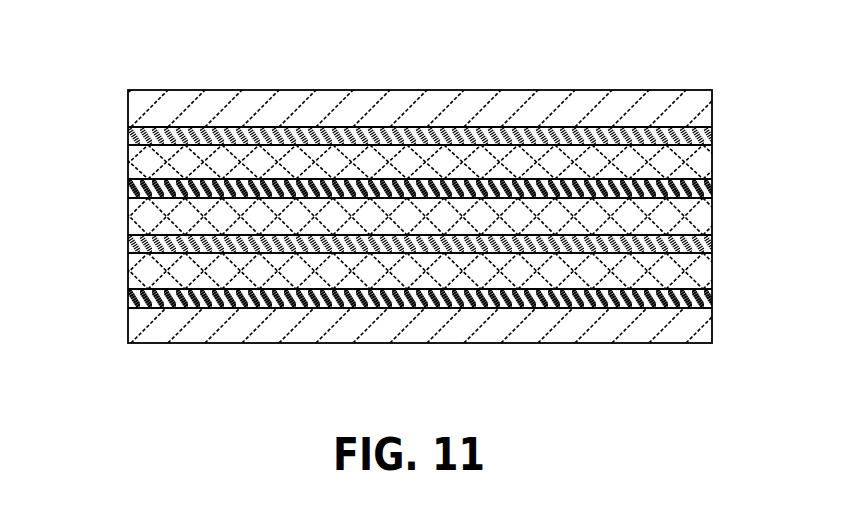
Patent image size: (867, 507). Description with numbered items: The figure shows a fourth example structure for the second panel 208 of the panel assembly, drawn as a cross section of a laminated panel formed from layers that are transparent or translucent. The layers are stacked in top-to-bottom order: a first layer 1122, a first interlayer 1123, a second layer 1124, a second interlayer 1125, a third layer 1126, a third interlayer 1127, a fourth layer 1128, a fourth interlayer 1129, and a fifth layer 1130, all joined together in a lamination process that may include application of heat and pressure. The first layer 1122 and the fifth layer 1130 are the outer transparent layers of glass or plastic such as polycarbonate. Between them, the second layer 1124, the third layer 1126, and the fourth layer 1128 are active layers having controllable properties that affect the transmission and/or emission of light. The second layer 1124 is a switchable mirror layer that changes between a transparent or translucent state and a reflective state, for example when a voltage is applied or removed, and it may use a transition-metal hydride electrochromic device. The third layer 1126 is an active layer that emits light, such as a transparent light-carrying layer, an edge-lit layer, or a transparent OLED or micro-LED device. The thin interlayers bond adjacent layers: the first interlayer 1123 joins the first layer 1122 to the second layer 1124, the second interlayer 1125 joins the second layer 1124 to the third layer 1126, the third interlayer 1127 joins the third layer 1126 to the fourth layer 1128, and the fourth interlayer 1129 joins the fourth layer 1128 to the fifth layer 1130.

The second panel 208 is at (115, 47).
The first layer 1122 is at (712, 112).
The first interlayer 1123 is at (128, 137).
The second layer 1124 is at (712, 163).
The second interlayer 1125 is at (128, 192).
The third layer 1126 is at (712, 222).
The third interlayer 1127 is at (128, 247).
The fourth layer 1128 is at (712, 275).
The fourth interlayer 1129 is at (128, 302).
The fifth layer 1130 is at (712, 330).